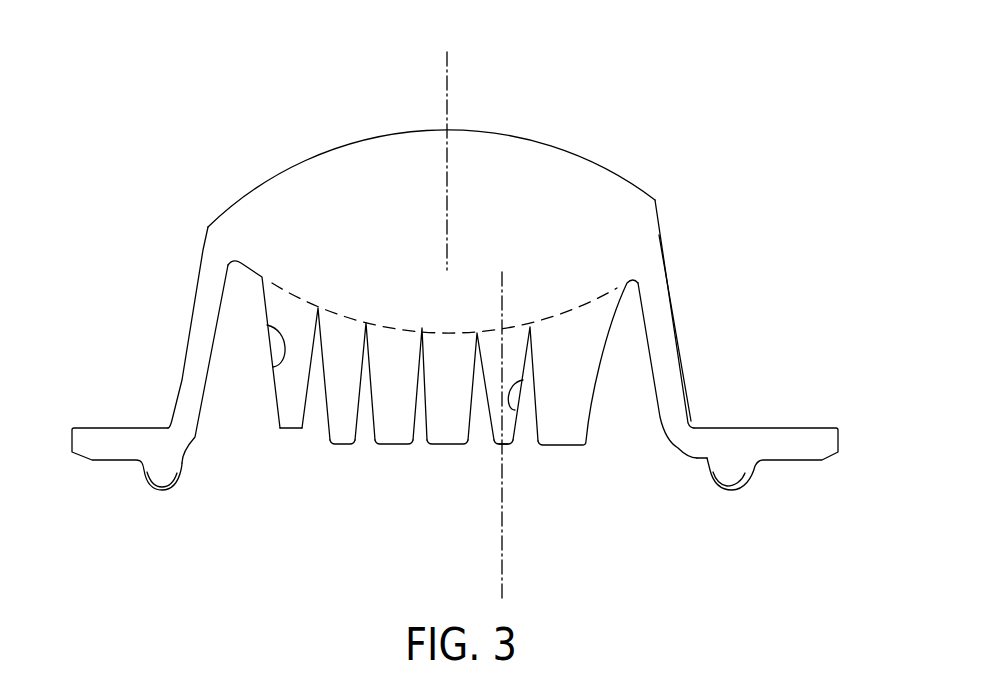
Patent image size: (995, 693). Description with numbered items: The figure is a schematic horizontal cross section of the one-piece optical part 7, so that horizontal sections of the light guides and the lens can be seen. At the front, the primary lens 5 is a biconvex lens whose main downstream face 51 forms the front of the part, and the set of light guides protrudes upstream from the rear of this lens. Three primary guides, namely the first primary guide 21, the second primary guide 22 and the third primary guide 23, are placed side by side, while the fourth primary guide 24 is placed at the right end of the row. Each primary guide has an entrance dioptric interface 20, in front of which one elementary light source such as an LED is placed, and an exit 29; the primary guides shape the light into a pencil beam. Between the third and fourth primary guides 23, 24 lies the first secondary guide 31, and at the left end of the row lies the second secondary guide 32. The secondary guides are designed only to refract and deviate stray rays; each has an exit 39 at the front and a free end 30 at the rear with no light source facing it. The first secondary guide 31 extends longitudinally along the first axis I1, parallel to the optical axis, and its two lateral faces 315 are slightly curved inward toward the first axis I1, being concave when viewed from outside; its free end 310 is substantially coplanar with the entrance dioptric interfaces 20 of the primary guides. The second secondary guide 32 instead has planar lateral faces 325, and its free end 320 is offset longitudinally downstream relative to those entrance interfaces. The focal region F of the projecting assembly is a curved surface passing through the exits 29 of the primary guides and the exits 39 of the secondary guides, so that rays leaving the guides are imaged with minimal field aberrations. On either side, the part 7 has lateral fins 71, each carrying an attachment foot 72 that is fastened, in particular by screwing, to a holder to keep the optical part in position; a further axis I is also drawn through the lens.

The one-piece optical part 7 is at (812, 120).
The primary lens 5 is at (245, 213).
The main downstream face 51 is at (488, 124).
The lateral fin 71 is at (198, 348).
The attachment foot 72 is at (100, 458).
The second secondary guide 32 is at (290, 382).
The free end of the second secondary guide 320 is at (280, 433).
The planar lateral faces 325 is at (320, 322).
The free end 30 is at (298, 430).
The entrance dioptric interface 20 is at (345, 445).
The first primary guide 21 is at (333, 428).
The second primary guide 22 is at (392, 428).
The third primary guide 23 is at (447, 428).
The first secondary guide 31 is at (493, 432).
The free end of the first secondary guide 310 is at (503, 447).
The fourth primary guide 24 is at (570, 413).
The lateral faces 315 is at (483, 360).
The exit 39 is at (290, 293).
The exit 29 is at (445, 332).
The focal region F is at (608, 288).
The axis I is at (447, 60).
The first axis I1 is at (502, 580).